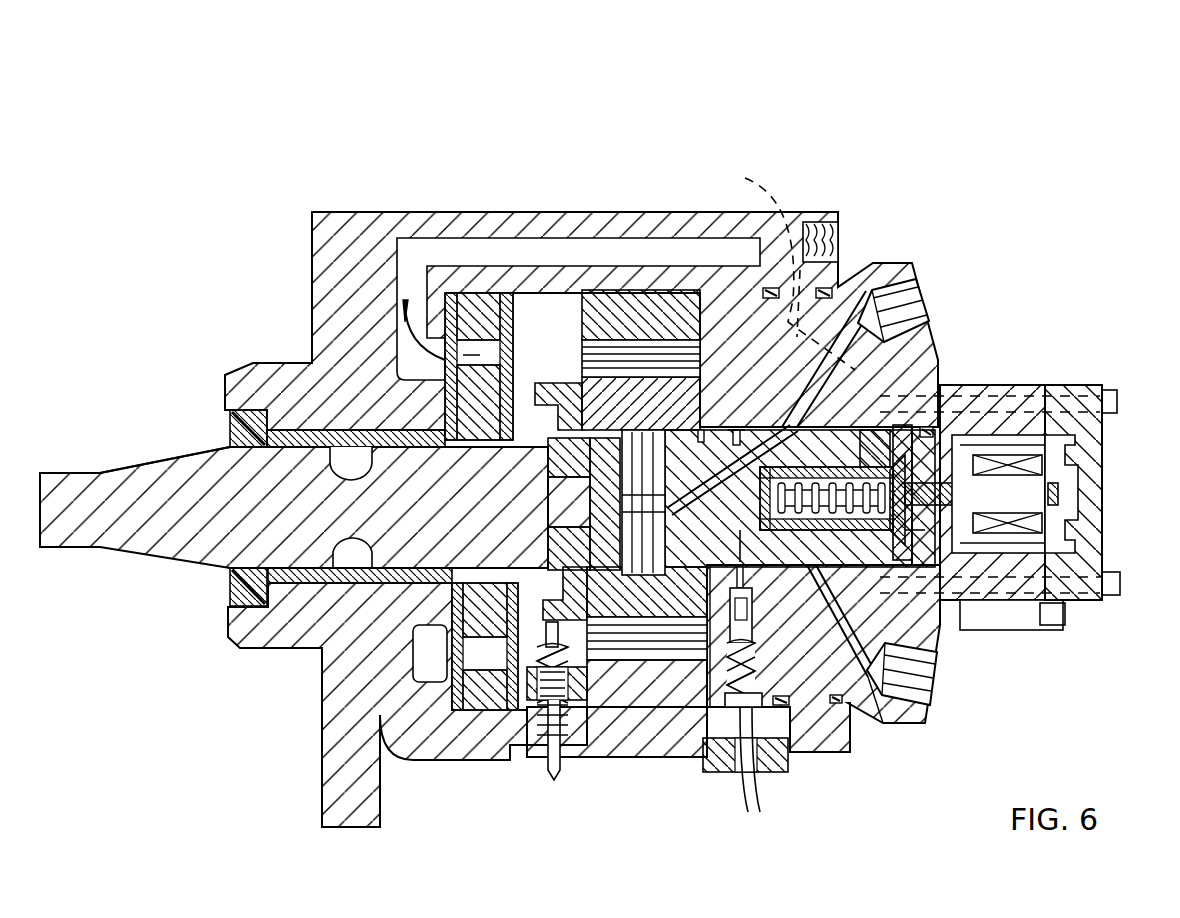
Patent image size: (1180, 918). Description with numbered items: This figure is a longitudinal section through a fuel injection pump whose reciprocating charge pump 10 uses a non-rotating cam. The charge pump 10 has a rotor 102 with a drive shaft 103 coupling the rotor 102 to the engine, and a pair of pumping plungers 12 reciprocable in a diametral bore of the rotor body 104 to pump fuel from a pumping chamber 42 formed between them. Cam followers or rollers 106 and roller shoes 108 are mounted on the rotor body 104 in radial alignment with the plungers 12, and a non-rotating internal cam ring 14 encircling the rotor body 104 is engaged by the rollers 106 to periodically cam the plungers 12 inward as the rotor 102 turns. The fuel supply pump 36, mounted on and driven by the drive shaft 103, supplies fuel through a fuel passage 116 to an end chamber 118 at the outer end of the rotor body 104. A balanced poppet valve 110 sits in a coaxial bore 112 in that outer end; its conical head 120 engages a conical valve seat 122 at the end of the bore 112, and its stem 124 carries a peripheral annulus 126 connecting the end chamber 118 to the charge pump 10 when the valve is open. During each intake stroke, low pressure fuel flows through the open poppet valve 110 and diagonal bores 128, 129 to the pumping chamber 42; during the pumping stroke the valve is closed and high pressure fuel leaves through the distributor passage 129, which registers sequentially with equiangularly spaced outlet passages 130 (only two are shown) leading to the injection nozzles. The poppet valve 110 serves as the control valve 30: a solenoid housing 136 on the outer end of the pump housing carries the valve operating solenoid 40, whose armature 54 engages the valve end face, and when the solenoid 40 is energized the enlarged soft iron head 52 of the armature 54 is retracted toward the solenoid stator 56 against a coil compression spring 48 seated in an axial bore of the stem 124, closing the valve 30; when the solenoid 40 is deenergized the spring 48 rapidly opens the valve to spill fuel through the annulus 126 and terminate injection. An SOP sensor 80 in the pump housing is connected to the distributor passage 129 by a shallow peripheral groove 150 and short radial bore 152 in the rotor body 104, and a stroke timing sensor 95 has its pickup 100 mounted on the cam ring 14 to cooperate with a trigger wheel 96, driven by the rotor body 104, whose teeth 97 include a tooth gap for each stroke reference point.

The charge pump 10 is at (633, 713).
The pumping plungers 12 is at (585, 505).
The cam ring 14 is at (672, 698).
The control valve 30 is at (1012, 373).
The fuel supply pump 36 is at (483, 316).
The solenoid 40 is at (1112, 447).
The pumping chamber 42 is at (668, 528).
The coil compression spring 48 is at (760, 495).
The enlarged soft iron head 52 is at (1060, 508).
The solenoid armature 54 is at (1050, 492).
The solenoid stator 56 is at (987, 437).
The SOP sensor 80 is at (745, 622).
The stroke timing sensor 95 is at (540, 740).
The trigger wheel 96 is at (540, 575).
The trigger elements or teeth 97 is at (535, 395).
The pickup 100 is at (520, 715).
The rotor 102 is at (150, 540).
The drive shaft 103 is at (172, 473).
The rotor body 104 is at (558, 457).
The cam followers or rollers 106 is at (697, 360).
The roller shoes 108 is at (700, 398).
The balanced poppet valve 110 is at (805, 530).
The coaxial bore 112 is at (857, 530).
The fuel passage 116 is at (637, 250).
The end chamber 118 is at (900, 590).
The conical head 120 is at (920, 492).
The conical valve seat 122 is at (895, 520).
The poppet valve stem 124 is at (740, 535).
The peripheral annulus 126 is at (866, 445).
The diagonal bore 128 is at (810, 422).
The distributor passage 129 is at (698, 508).
The outlet passages 130 is at (893, 272).
The solenoid housing 136 is at (1088, 567).
The shallow peripheral groove 150 is at (725, 420).
The short radial bore 152 is at (710, 465).